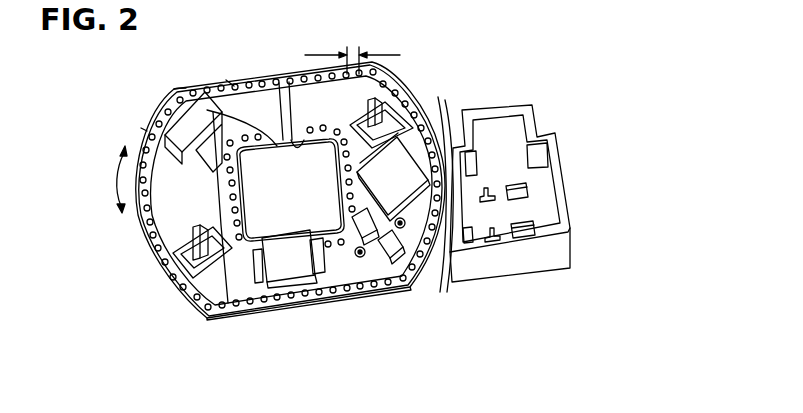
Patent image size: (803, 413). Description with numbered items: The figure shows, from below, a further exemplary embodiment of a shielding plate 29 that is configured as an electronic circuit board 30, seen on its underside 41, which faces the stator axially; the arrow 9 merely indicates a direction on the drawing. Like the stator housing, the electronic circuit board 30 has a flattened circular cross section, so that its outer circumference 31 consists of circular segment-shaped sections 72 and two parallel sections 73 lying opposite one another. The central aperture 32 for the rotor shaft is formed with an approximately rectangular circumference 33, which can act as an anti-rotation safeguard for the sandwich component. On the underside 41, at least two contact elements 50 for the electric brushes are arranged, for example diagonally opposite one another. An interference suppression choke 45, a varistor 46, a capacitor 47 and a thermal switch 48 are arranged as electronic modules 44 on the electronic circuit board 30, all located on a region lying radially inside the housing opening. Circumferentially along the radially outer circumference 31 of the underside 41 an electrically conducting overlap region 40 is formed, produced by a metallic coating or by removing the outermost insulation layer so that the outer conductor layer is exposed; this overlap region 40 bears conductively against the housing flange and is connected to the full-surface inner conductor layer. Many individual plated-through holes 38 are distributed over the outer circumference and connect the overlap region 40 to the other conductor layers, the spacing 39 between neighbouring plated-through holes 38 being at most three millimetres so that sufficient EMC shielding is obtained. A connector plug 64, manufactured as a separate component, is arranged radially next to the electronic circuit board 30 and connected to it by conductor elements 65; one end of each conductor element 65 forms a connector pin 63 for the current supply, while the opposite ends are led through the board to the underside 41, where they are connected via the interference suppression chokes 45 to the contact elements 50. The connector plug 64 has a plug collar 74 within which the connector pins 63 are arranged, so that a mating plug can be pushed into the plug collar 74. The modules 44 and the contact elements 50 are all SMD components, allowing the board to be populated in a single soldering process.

The pivot direction arrow 9 is at (118, 182).
The shielding plate 29 is at (332, 170).
The electronic circuit board 30 is at (428, 96).
The outer circumference 31 is at (146, 128).
The central aperture 32 is at (183, 104).
The rectangular circumference 33 is at (273, 160).
The plated-through holes 38 is at (303, 70).
The spacing 39 is at (347, 66).
The overlap region 40 is at (228, 78).
The underside 41 is at (170, 221).
The electronic modules 44 is at (364, 231).
The interference suppression choke 45 is at (240, 263).
The varistor 46 is at (360, 240).
The capacitor 47 is at (392, 257).
The thermal switch 48 is at (183, 125).
The contact elements 50 is at (418, 102).
The connector pins 63 is at (523, 228).
The connector plug 64 is at (510, 128).
The conductor elements 65 is at (445, 117).
The circular segment-shaped sections 72 is at (153, 263).
The parallel sections 73 is at (268, 313).
The plug collar 74 is at (557, 177).